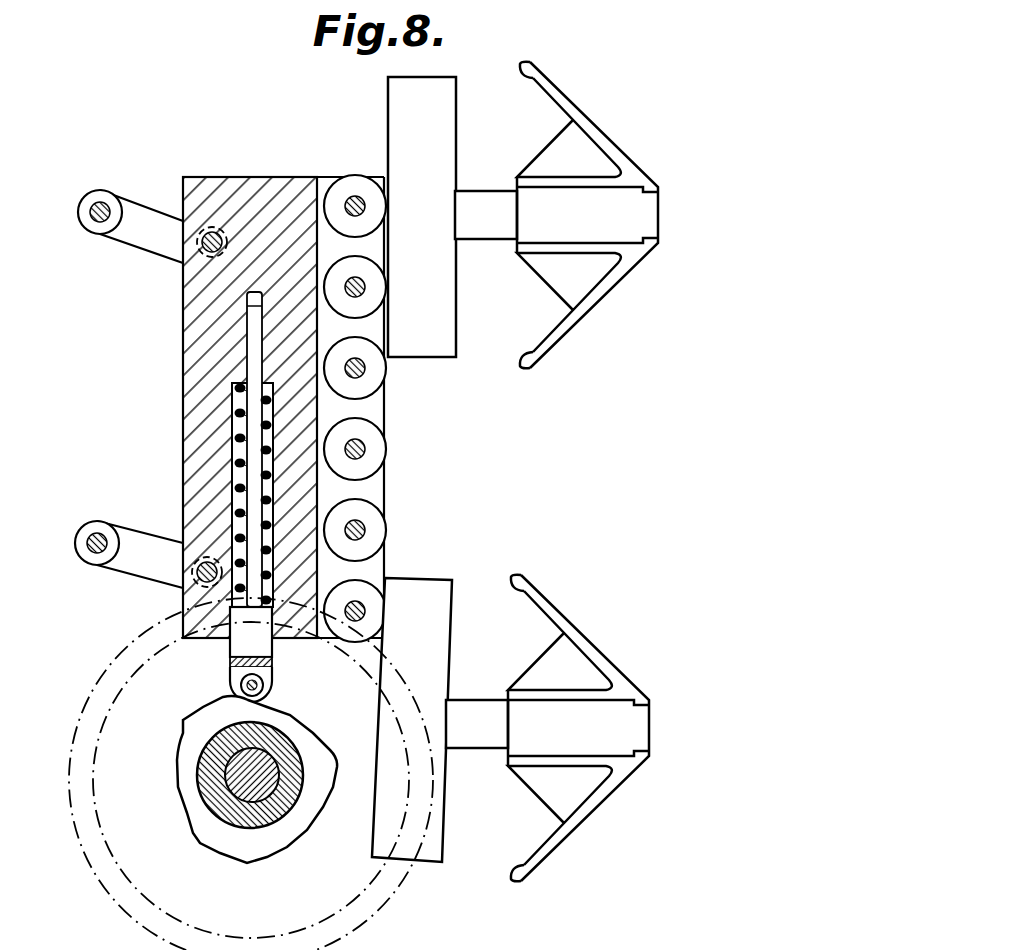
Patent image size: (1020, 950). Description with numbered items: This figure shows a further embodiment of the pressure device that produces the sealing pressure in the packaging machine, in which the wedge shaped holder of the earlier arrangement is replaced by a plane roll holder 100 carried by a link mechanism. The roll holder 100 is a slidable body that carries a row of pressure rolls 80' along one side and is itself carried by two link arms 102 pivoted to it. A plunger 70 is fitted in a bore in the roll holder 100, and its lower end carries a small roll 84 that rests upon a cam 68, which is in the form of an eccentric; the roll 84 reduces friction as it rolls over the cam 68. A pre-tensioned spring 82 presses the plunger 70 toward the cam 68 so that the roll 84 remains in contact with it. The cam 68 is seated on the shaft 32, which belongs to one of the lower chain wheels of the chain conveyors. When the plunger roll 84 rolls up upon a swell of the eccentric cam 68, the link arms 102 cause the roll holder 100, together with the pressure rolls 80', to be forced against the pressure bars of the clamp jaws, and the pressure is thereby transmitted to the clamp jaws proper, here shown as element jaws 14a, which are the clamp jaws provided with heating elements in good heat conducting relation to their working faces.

The roll holder 100 is at (268, 188).
The link arms 102 is at (127, 204).
The pre-tensioned spring 82 is at (233, 413).
The pressure rolls 80' is at (393, 408).
The element jaw 14a is at (659, 214).
The plunger 70 is at (238, 649).
The roll 84 is at (263, 686).
The shaft 32 is at (222, 778).
The cam 68 is at (297, 822).